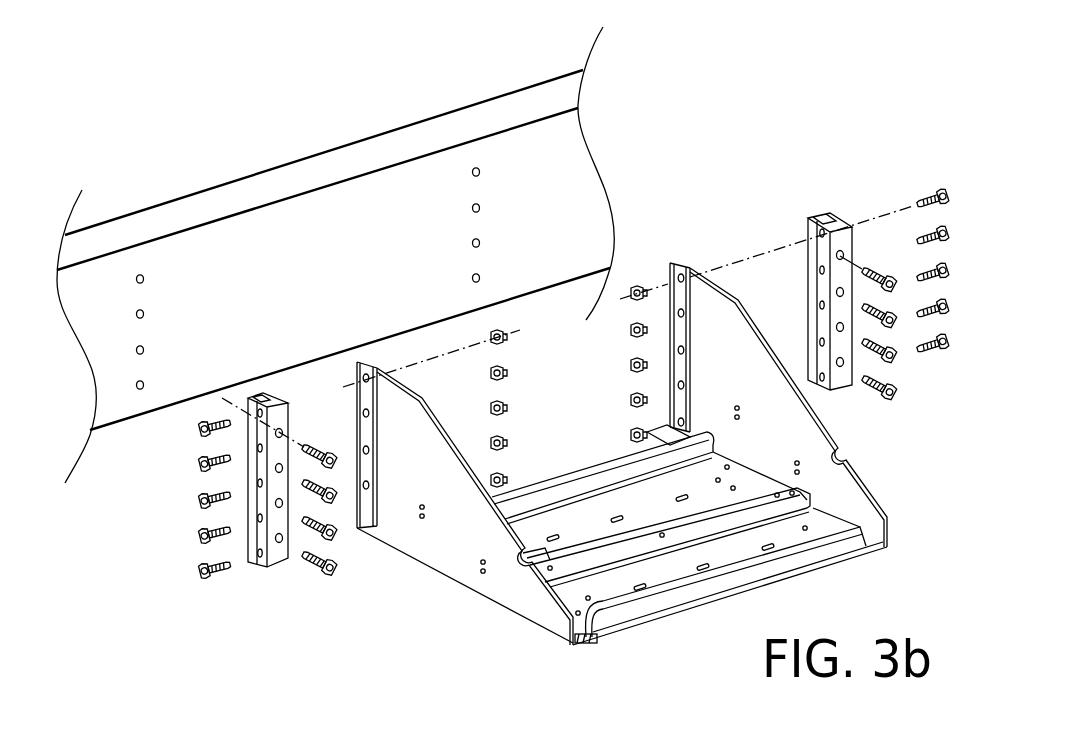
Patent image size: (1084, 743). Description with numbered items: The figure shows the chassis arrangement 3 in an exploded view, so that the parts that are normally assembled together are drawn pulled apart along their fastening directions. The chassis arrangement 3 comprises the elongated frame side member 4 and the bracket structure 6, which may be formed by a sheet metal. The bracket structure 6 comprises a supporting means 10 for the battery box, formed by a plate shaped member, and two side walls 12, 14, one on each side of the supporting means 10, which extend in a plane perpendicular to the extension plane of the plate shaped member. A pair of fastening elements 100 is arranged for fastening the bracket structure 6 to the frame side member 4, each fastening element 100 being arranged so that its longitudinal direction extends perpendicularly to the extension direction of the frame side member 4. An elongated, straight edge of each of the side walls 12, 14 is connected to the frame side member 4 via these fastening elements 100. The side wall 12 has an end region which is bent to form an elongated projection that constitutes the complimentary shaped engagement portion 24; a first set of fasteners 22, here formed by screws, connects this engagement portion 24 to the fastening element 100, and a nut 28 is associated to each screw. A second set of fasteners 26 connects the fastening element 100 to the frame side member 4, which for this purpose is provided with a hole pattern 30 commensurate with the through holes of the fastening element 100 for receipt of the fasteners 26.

The chassis arrangement 3 is at (179, 106).
The frame side member 4 is at (298, 252).
The bracket structure 6 is at (436, 596).
The means for supporting the battery box 10 is at (657, 563).
The side wall 12 is at (513, 583).
The side wall 14 is at (838, 502).
The first set of fasteners 22 is at (196, 431).
The complimentary shaped engagement portion 24 is at (384, 350).
The second set of fasteners 26 is at (307, 462).
The nut 28 is at (490, 335).
The hole pattern 30 is at (140, 279).
The fastening element 100 is at (237, 584).